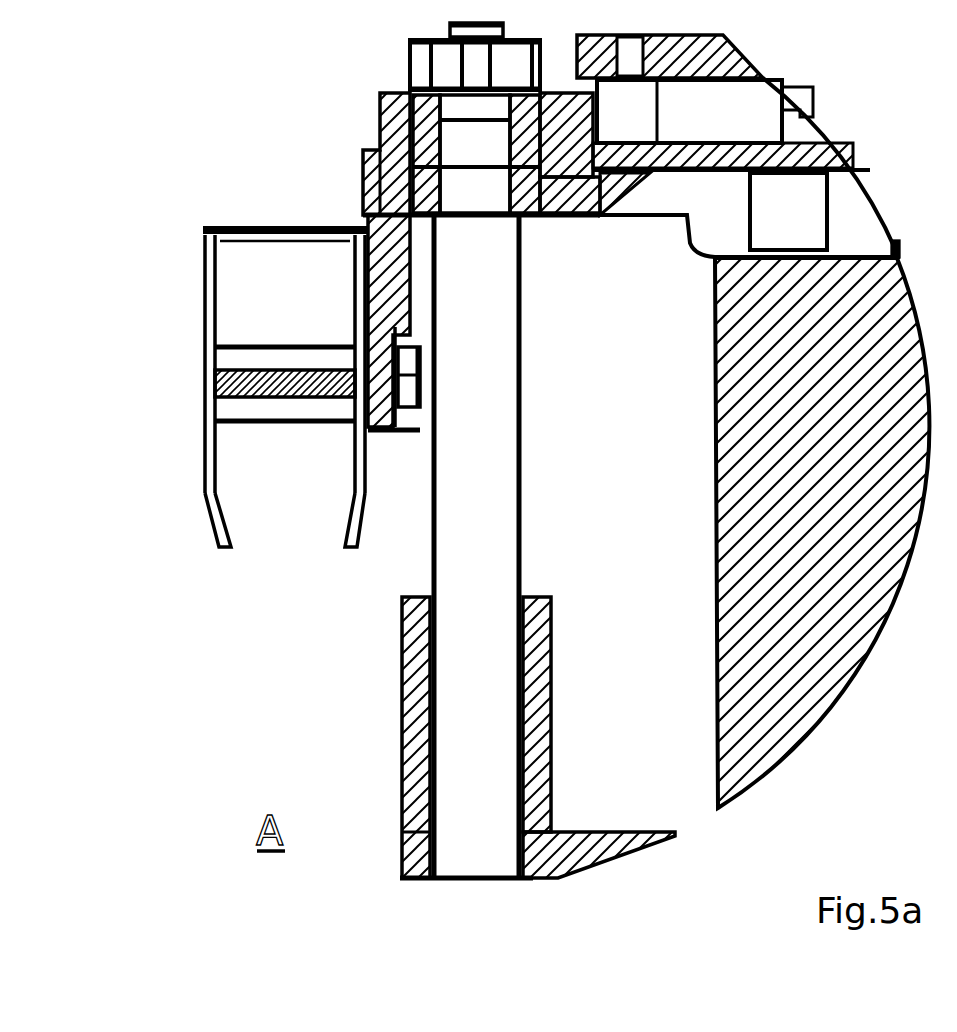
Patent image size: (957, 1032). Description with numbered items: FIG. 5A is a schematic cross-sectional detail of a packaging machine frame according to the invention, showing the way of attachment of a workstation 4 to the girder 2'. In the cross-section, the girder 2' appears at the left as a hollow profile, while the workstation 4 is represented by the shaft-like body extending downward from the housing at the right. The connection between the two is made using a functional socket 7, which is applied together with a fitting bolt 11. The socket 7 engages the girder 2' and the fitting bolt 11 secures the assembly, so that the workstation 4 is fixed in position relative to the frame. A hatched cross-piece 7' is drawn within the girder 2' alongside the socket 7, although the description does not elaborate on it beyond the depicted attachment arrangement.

The girder 2' is at (211, 372).
The clamping bar 7' is at (205, 377).
The functional socket 7 is at (285, 475).
The fitting bolt 11 is at (402, 437).
The workstation 4 is at (590, 451).